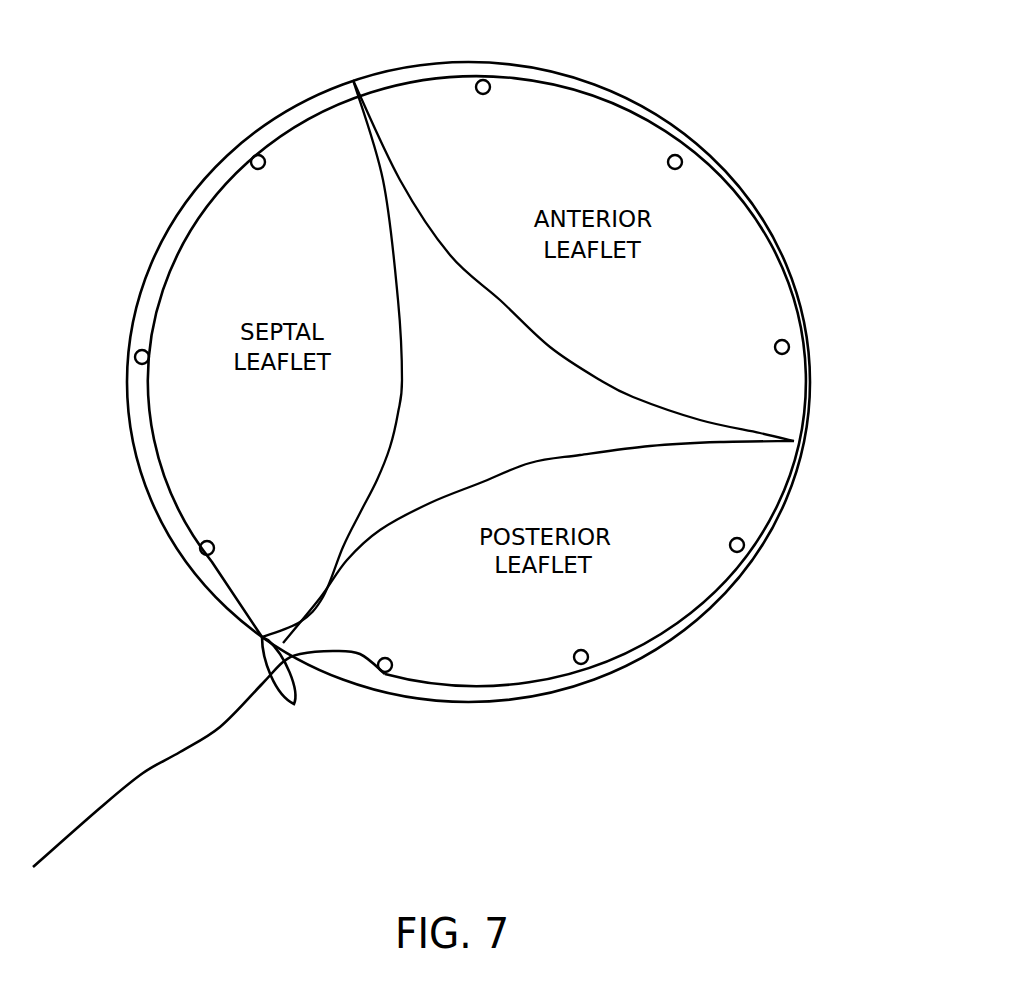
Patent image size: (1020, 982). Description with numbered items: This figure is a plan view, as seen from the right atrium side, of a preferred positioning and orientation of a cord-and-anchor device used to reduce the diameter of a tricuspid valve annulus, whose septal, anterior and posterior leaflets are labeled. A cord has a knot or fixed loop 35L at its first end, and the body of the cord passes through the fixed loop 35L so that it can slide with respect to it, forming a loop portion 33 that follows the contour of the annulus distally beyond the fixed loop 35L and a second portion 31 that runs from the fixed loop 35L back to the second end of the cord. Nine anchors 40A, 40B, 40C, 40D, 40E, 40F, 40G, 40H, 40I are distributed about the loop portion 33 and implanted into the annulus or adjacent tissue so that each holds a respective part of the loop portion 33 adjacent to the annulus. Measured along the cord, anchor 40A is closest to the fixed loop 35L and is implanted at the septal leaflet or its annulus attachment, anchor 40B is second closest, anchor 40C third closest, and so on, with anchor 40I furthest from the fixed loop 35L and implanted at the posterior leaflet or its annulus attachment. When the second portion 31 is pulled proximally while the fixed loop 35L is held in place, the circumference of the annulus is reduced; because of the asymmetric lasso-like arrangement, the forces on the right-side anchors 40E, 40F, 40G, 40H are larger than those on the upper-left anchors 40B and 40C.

The second portion of the cord 31 is at (118, 793).
The loop portion of the cord 33 is at (504, 689).
The fixed loop 35L is at (295, 706).
The anchor 40A is at (203, 556).
The anchor 40B is at (138, 350).
The anchor 40C is at (255, 155).
The anchor 40D is at (487, 80).
The anchor 40E is at (679, 157).
The anchor 40F is at (786, 341).
The anchor 40G is at (741, 552).
The anchor 40H is at (585, 665).
The anchor 40I is at (387, 673).